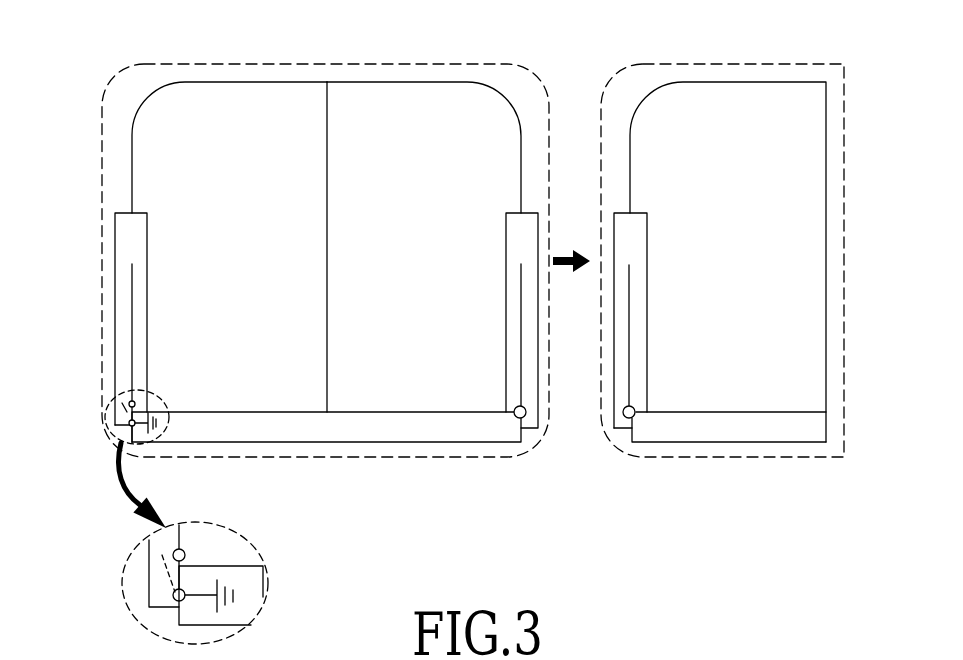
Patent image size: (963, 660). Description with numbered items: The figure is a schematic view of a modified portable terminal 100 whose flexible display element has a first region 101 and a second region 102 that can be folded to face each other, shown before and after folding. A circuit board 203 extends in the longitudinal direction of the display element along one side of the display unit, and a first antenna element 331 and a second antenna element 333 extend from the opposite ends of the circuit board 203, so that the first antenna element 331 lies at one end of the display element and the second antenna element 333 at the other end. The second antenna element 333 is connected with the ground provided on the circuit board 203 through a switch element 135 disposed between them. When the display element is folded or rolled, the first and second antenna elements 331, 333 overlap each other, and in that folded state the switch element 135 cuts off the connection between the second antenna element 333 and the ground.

The portable terminal 100 is at (99, 110).
The first region 101 is at (429, 100).
The second region 102 is at (229, 100).
The circuit board 203 is at (400, 425).
The first antenna element 331 is at (521, 390).
The second antenna element 333 is at (132, 326).
The switch element 135 is at (108, 416).